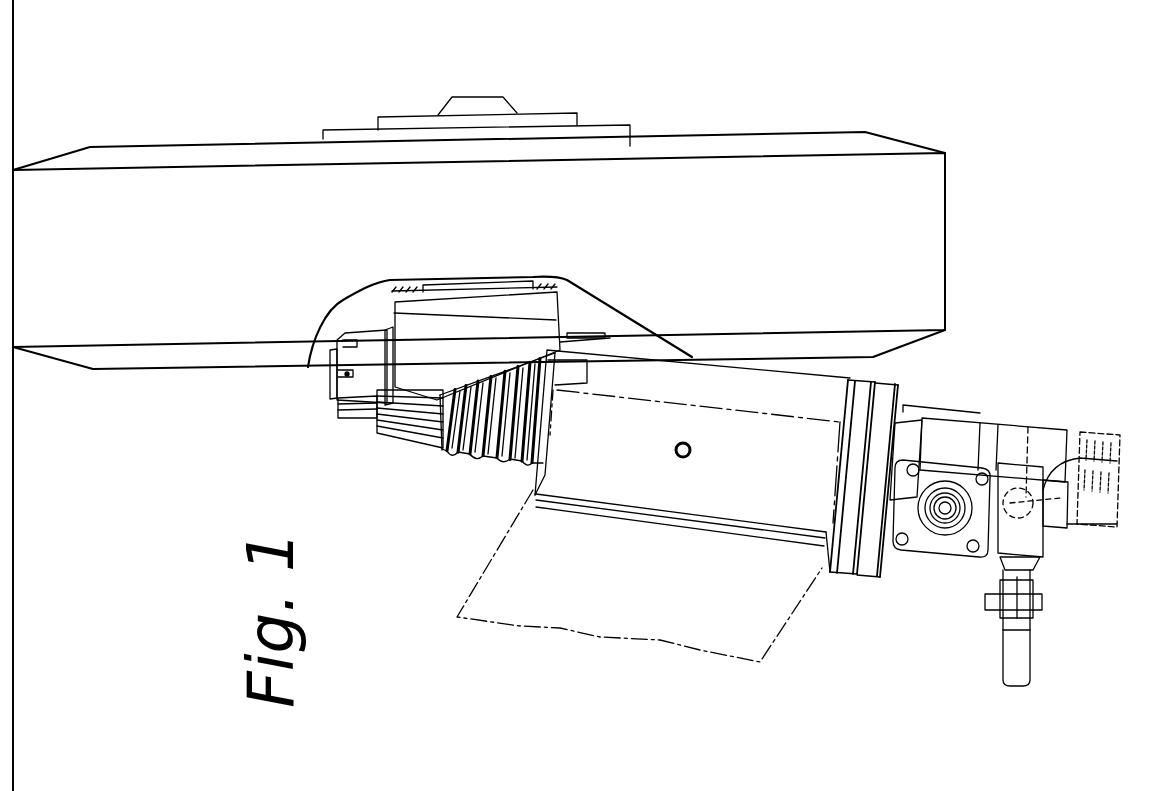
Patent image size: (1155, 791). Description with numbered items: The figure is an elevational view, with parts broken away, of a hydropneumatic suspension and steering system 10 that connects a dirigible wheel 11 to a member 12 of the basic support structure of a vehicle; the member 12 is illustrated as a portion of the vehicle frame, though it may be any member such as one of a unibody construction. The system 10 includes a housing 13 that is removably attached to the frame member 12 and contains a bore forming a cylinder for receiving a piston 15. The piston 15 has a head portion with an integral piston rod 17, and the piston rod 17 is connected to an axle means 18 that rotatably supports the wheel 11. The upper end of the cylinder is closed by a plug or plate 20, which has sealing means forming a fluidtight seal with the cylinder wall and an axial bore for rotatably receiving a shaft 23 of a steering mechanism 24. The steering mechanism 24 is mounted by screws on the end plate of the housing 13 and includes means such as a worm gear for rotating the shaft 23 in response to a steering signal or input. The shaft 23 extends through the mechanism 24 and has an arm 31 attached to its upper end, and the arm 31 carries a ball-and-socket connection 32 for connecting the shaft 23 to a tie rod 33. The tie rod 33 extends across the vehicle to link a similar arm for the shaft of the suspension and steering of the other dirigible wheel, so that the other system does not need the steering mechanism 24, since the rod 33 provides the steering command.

The hydropneumatic suspension and steering system 10 is at (797, 480).
The dirigible wheel 11 is at (937, 212).
The frame member 12 is at (515, 587).
The housing 13 is at (833, 390).
The piston 15 is at (473, 462).
The piston rod 17 is at (332, 377).
The axle means 18 is at (407, 417).
The plug or plate 20 is at (862, 562).
The shaft 23 is at (1113, 480).
The steering mechanism 24 is at (965, 565).
The arm 31 is at (1082, 503).
The ball-and-socket connection 32 is at (1030, 525).
The tie rod 33 is at (1023, 652).